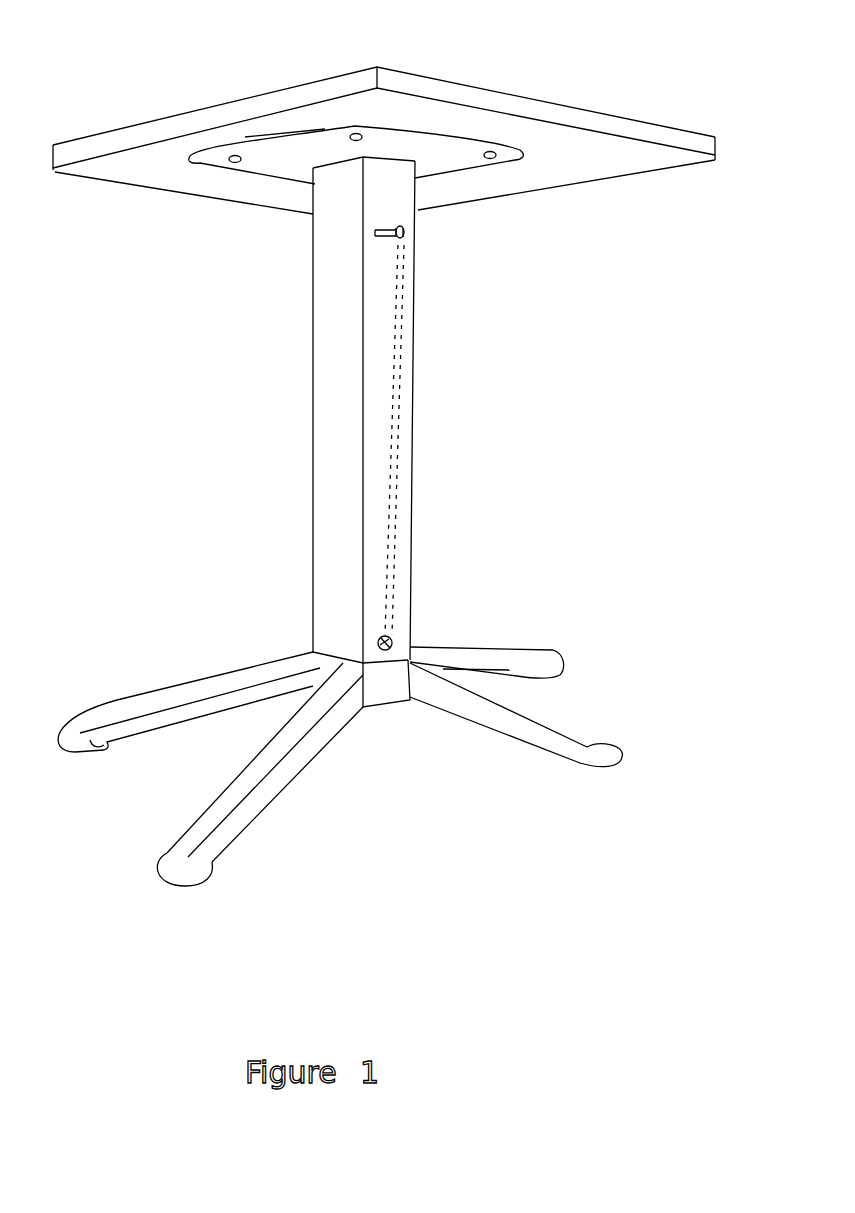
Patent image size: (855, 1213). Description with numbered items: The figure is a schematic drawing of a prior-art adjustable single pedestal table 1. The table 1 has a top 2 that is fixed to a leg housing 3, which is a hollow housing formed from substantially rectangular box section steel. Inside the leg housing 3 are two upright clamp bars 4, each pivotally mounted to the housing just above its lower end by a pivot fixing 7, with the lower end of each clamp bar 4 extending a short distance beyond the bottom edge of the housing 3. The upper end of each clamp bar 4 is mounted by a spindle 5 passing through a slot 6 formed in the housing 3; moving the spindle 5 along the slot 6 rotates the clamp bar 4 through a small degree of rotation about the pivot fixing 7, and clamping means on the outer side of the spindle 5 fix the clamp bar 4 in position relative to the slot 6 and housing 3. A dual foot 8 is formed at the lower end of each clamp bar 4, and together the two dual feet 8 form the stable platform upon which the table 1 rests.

The single pedestal table 1 is at (538, 338).
The top 2 is at (455, 93).
The leg housing 3 is at (413, 380).
The clamp bar 4 is at (393, 506).
The spindle 5 is at (405, 232).
The slot 6 is at (375, 236).
The pivot fixing 7 is at (392, 637).
The dual foot 8 is at (480, 712).